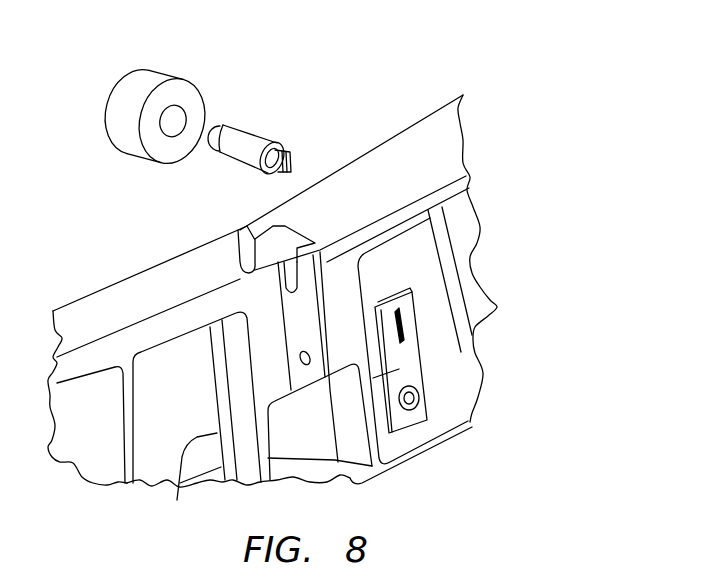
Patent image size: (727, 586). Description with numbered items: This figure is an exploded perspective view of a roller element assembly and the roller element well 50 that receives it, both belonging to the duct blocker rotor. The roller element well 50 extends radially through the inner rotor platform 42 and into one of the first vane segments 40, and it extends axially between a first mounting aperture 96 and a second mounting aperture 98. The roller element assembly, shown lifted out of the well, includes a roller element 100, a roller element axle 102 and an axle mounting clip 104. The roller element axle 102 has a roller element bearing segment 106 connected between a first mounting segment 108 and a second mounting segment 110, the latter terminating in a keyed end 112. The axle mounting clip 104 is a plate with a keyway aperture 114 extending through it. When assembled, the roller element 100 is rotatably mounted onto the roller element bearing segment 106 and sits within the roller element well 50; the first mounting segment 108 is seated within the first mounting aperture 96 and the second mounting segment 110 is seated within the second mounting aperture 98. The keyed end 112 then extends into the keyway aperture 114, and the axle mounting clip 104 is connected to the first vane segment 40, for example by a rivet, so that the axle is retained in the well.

The first vane segment 40 is at (177, 500).
The inner rotor platform 42 is at (92, 313).
The roller element well 50 is at (301, 236).
The first mounting aperture 96 is at (236, 243).
The second mounting aperture 98 is at (290, 286).
The roller element 100 is at (168, 68).
The roller element axle 102 is at (242, 139).
The axle mounting clip 104 is at (466, 360).
The roller element bearing segment 106 is at (261, 133).
The first mounting segment 108 is at (221, 124).
The second mounting segment 110 is at (271, 176).
The keyed end 112 is at (291, 154).
The keyway aperture 114 is at (402, 322).